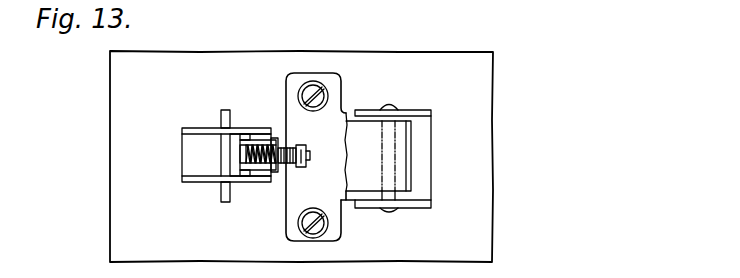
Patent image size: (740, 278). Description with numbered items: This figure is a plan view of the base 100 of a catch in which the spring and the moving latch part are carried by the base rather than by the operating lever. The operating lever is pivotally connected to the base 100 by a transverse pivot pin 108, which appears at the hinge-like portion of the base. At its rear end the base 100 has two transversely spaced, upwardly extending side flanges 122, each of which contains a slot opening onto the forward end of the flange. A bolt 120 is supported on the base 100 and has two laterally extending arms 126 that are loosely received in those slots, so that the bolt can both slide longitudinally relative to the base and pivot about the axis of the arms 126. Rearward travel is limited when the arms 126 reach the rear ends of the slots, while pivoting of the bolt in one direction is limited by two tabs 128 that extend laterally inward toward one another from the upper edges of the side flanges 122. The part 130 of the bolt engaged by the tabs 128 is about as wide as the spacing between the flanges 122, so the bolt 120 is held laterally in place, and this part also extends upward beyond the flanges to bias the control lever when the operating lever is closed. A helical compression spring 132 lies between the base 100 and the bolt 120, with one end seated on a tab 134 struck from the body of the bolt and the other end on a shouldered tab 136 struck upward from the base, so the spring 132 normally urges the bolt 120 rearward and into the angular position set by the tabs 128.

The base 100 is at (334, 237).
The transverse pivot pin 108 is at (386, 104).
The bolt 120 is at (268, 170).
The side flanges 122 is at (185, 128).
The laterally extending arms 126 is at (222, 111).
The tabs 128 is at (245, 137).
The part of the bolt 130 is at (254, 140).
The spring 132 is at (284, 148).
The tab 134 is at (240, 154).
The shouldered tab 136 is at (308, 151).